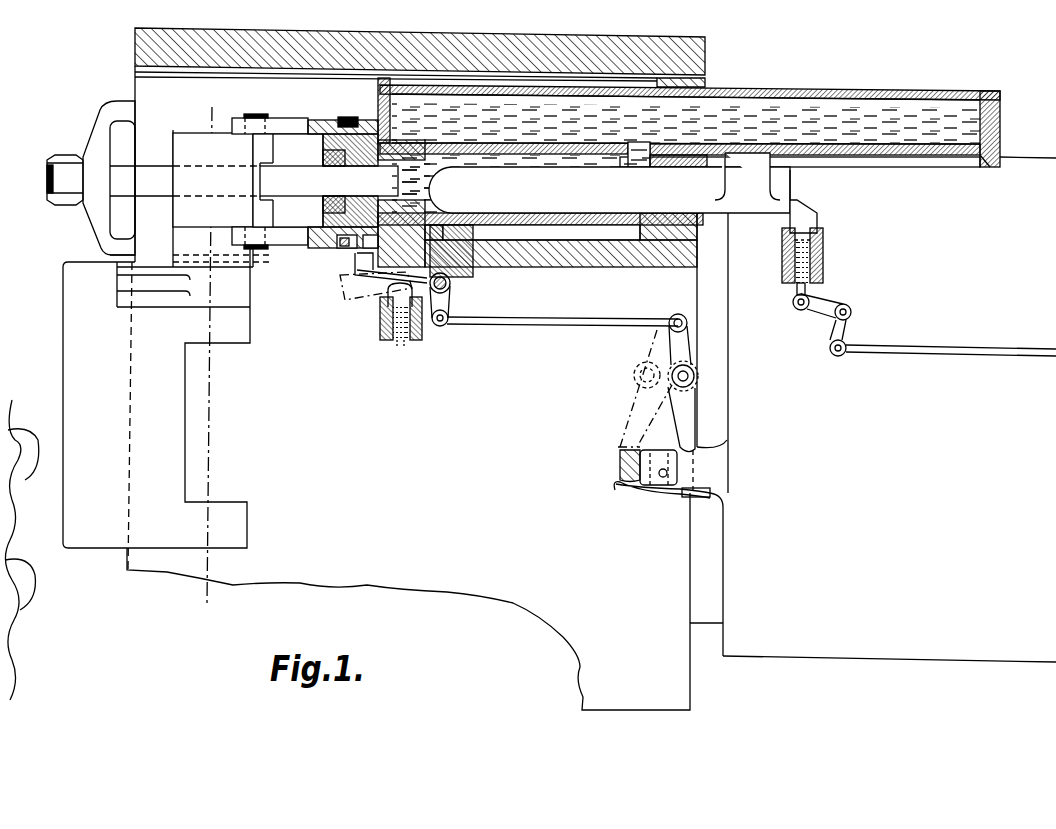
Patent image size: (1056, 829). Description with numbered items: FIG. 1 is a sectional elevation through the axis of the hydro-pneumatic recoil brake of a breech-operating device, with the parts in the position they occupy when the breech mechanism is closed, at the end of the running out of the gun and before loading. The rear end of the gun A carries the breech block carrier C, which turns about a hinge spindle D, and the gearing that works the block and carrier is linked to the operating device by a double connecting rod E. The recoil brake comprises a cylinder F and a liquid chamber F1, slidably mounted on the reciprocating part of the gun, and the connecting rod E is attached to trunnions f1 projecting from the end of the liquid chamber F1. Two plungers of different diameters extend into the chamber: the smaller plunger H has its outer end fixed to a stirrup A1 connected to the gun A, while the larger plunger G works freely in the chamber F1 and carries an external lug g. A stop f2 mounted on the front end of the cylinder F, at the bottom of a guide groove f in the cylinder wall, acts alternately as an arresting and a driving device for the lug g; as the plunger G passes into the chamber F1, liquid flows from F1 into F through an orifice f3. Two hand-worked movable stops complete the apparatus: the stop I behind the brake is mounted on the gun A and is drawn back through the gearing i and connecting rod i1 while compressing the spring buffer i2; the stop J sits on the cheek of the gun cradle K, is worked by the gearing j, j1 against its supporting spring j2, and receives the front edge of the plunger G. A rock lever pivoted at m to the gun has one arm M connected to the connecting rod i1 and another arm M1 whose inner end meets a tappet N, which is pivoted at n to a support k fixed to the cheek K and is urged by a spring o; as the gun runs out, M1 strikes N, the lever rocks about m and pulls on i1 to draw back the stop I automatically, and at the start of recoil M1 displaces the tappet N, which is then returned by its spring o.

The gun A is at (497, 584).
The stirrup A1 is at (97, 214).
The carrier C is at (72, 495).
The hinge spindle D is at (205, 474).
The double connecting rod E is at (293, 125).
The recoil brake cylinder F is at (752, 92).
The liquid chamber F1 is at (603, 240).
The plunger of larger diameter G is at (548, 200).
The plunger of smaller diameter H is at (298, 190).
The movable stop I is at (358, 282).
The movable stop J is at (818, 220).
The gun cradle cheek K is at (993, 650).
The rock lever arm M is at (684, 350).
The rock lever arm M1 is at (690, 425).
The tappet N is at (620, 465).
The guide groove f is at (943, 165).
The trunnions f1 is at (312, 303).
The stop f2 is at (993, 168).
The orifice f3 is at (641, 150).
The lug g is at (782, 180).
The gearing i is at (452, 300).
The connecting rod i1 is at (552, 326).
The spring buffer i2 is at (386, 322).
The gearing j is at (832, 329).
The gearing member j1 is at (994, 354).
The supporting spring j2 is at (824, 262).
The support k is at (712, 476).
The pivot m is at (699, 376).
The pivot n is at (650, 492).
The spring o is at (664, 480).